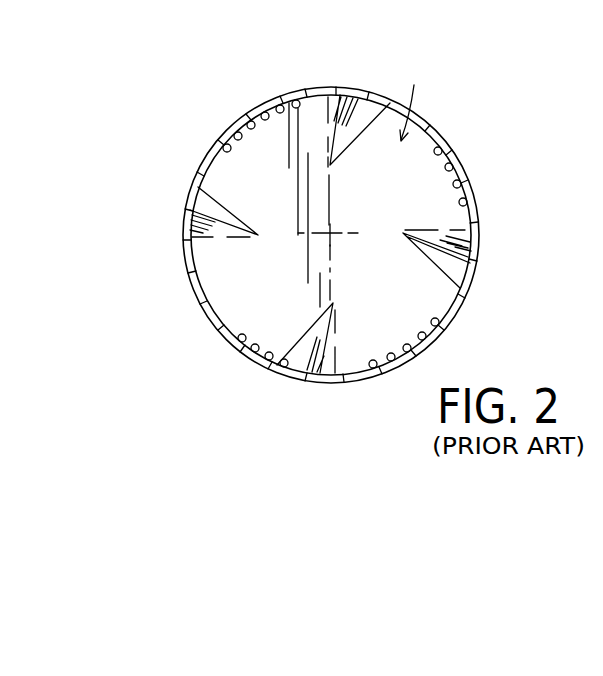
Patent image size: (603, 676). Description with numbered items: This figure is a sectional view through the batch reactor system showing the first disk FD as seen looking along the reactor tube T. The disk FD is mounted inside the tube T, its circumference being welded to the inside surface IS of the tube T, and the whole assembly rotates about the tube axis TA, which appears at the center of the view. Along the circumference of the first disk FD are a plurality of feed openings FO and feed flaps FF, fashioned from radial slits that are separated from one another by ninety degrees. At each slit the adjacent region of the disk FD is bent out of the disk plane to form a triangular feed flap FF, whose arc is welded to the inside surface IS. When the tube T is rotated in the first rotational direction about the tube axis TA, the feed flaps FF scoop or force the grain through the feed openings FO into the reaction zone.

The reactor tube T is at (458, 148).
The inside surface IS is at (474, 192).
The tube axis TA is at (340, 229).
The first disk FD is at (418, 99).
The feed flaps FF is at (337, 107).
The feed openings FO is at (368, 110).